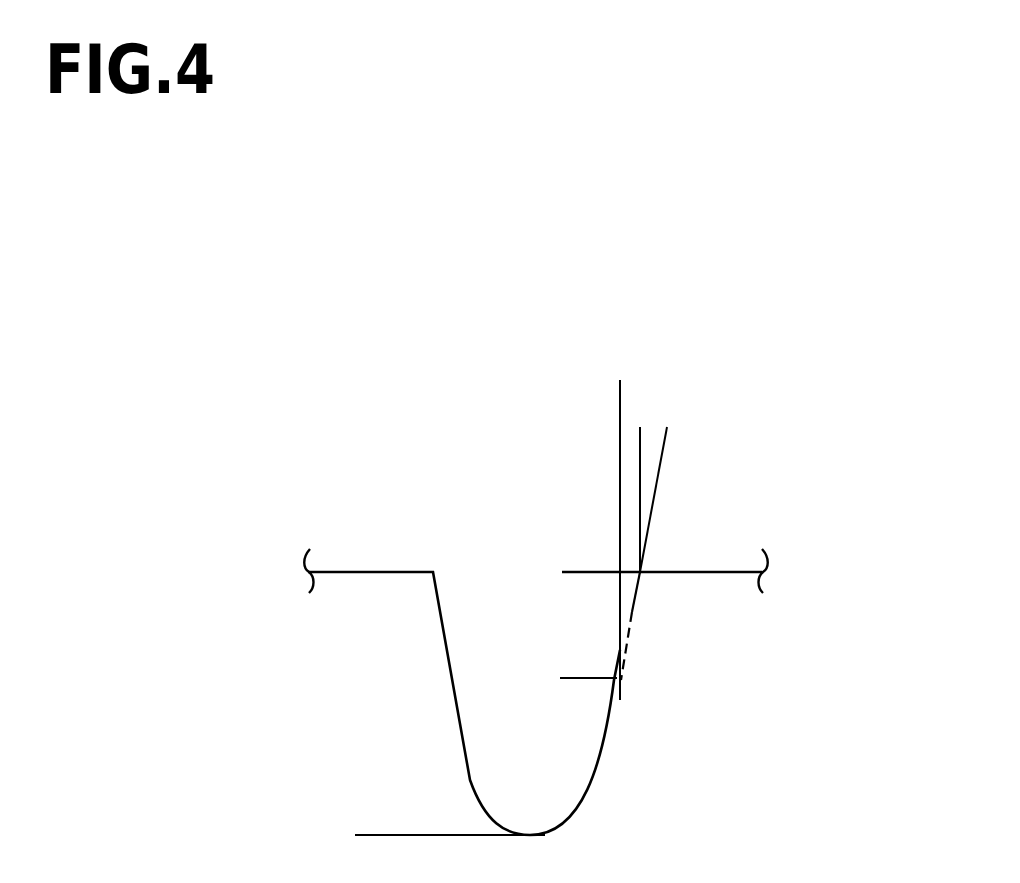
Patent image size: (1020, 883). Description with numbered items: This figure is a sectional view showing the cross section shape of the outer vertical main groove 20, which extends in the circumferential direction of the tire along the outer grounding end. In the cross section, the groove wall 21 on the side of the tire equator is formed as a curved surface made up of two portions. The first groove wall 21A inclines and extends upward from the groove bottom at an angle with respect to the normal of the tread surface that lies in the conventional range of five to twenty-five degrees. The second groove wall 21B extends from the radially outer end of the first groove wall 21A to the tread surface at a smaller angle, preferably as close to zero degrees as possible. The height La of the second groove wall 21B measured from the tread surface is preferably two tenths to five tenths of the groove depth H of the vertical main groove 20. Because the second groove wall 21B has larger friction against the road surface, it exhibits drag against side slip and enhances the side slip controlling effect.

The outer vertical main groove 20 is at (490, 585).
The groove wall 21 is at (721, 703).
The first groove wall 21A is at (607, 732).
The second groove wall 21B is at (620, 598).
The groove depth H is at (369, 572).
The height of the second groove wall La is at (573, 572).